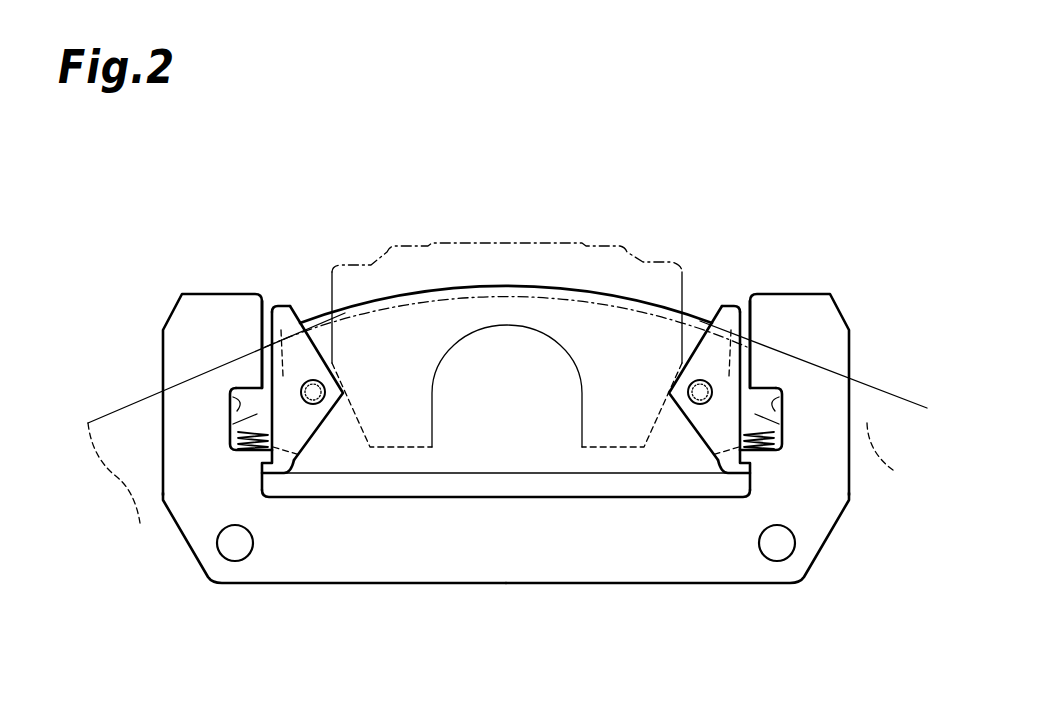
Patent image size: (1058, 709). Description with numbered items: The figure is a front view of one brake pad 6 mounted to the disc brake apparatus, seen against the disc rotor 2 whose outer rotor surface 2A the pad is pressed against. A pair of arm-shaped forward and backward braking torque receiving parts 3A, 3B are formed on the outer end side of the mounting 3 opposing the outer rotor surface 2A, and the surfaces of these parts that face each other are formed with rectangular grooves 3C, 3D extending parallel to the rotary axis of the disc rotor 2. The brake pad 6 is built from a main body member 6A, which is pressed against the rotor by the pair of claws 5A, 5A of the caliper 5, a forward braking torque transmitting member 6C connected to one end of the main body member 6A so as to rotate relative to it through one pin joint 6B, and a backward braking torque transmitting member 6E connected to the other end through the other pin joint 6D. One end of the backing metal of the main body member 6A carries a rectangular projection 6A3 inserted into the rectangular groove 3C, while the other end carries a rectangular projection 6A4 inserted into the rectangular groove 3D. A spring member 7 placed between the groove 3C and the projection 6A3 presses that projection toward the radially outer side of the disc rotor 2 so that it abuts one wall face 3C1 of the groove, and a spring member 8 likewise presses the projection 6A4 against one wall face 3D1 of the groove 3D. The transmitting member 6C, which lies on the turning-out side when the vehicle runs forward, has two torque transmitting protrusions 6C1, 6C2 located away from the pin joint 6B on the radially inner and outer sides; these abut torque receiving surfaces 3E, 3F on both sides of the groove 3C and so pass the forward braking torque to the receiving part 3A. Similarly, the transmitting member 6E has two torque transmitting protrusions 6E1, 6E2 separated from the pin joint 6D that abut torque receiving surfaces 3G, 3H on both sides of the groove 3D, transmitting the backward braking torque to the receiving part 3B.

The disc rotor 2 is at (927, 408).
The outer rotor surface 2A is at (913, 420).
The mounting 3 is at (480, 590).
The forward braking torque receiving part 3A is at (217, 294).
The backward braking torque receiving part 3B is at (795, 294).
The rectangular groove 3C is at (231, 394).
The wall face 3C1 is at (230, 388).
The rectangular groove 3D is at (781, 394).
The wall face 3D1 is at (782, 388).
The torque receiving surface 3E is at (268, 492).
The torque receiving surface 3F is at (289, 307).
The torque receiving surface 3G is at (744, 492).
The torque receiving surface 3H is at (723, 307).
The caliper 5 is at (533, 233).
The claws 5A is at (400, 449).
The brake pad 6 is at (477, 283).
The main body member 6A is at (507, 474).
The rectangular projection 6A3 is at (280, 472).
The rectangular projection 6A4 is at (732, 472).
The pin joint 6B is at (313, 379).
The forward braking torque transmitting member 6C is at (323, 473).
The torque transmitting protrusion 6C1 is at (250, 442).
The torque transmitting protrusion 6C2 is at (270, 310).
The pin joint 6D is at (700, 379).
The backward braking torque transmitting member 6E is at (689, 473).
The torque transmitting protrusion 6E1 is at (762, 442).
The torque transmitting protrusion 6E2 is at (742, 310).
The spring member 7 is at (238, 447).
The spring member 8 is at (774, 447).